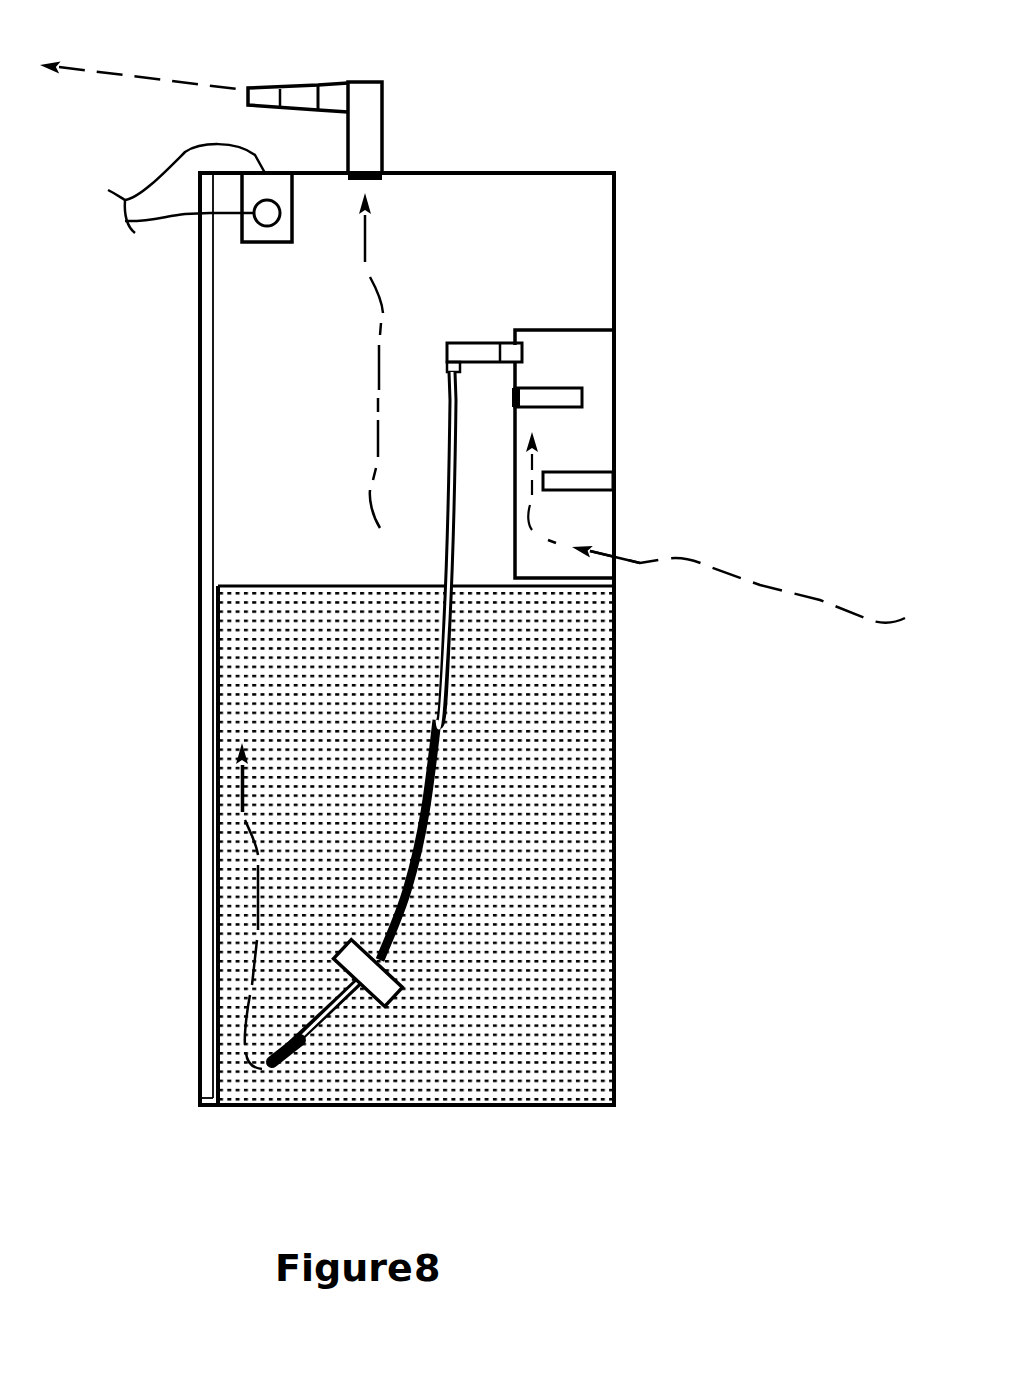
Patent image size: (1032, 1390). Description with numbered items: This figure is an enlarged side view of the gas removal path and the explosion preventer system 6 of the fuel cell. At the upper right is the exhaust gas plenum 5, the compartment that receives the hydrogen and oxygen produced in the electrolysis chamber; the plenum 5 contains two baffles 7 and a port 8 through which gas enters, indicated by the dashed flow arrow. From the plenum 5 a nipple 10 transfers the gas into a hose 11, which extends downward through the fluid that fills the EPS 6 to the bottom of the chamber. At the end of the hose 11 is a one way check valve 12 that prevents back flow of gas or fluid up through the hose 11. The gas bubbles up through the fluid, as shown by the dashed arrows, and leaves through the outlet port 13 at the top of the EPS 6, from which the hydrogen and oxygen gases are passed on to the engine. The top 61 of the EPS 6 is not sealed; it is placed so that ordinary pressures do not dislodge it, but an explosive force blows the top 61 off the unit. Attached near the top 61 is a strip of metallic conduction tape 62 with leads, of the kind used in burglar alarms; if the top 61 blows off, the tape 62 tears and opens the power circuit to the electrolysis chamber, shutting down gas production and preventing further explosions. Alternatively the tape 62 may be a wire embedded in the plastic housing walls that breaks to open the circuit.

The exhaust gas plenum 5 is at (613, 450).
The explosion preventer system 6 is at (197, 788).
The baffles 7 is at (532, 408).
The port 8 is at (627, 573).
The nipple 10 is at (478, 342).
The hose 11 is at (440, 467).
The one way check valve 12 is at (352, 947).
The outlet port 13 is at (370, 72).
The top 61 is at (440, 168).
The metallic conduction tape 62 is at (267, 245).